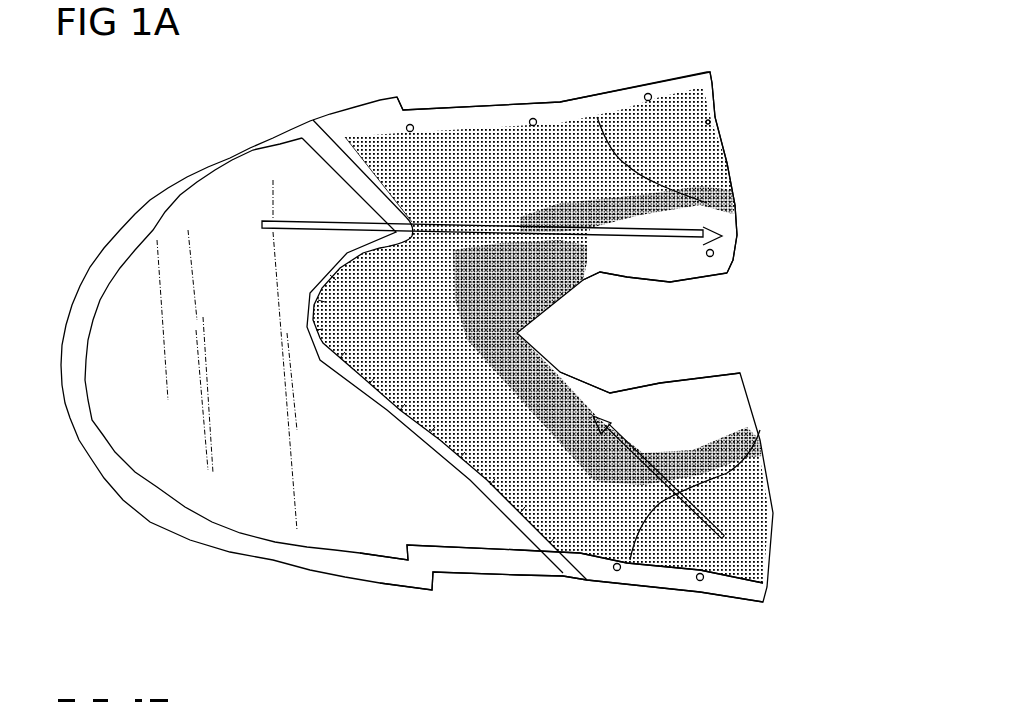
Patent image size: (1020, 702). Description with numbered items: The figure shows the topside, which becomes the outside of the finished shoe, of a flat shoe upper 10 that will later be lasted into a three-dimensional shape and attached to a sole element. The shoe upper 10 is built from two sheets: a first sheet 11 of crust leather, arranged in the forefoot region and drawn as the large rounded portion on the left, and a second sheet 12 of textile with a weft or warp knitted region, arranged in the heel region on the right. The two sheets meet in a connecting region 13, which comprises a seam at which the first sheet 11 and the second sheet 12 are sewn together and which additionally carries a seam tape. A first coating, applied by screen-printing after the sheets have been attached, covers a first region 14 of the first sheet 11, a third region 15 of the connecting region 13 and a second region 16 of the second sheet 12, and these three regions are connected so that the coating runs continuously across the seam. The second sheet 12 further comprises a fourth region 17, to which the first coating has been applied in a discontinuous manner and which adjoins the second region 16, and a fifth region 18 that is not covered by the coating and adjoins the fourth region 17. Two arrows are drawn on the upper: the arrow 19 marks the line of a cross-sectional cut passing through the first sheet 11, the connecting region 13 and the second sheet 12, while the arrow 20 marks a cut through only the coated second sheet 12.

The shoe upper 10 is at (132, 155).
The first sheet 11 is at (143, 400).
The second sheet 12 is at (565, 157).
The connecting region 13 is at (348, 360).
The first region 14 is at (267, 222).
The third region 15 is at (407, 228).
The second region 16 is at (480, 232).
The fourth region 17 is at (593, 240).
The fifth region 18 is at (677, 238).
The arrow indicating cross-sectional cut 19 is at (724, 240).
The arrow indicating cross-sectional cut 20 is at (727, 527).